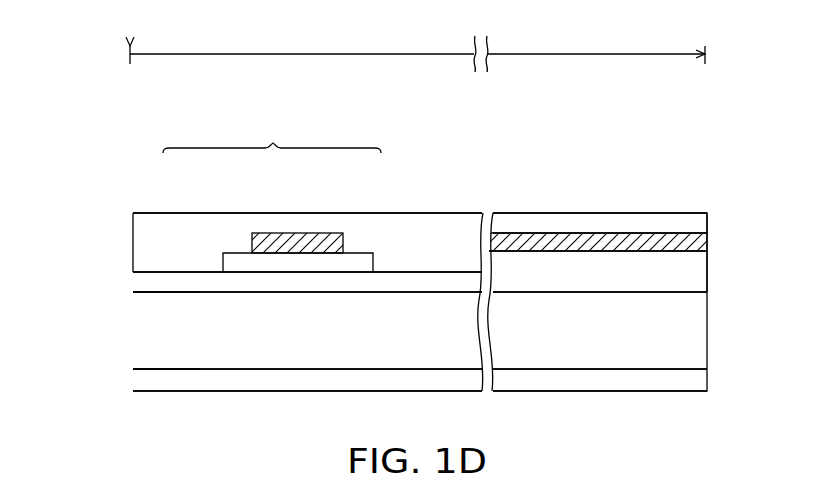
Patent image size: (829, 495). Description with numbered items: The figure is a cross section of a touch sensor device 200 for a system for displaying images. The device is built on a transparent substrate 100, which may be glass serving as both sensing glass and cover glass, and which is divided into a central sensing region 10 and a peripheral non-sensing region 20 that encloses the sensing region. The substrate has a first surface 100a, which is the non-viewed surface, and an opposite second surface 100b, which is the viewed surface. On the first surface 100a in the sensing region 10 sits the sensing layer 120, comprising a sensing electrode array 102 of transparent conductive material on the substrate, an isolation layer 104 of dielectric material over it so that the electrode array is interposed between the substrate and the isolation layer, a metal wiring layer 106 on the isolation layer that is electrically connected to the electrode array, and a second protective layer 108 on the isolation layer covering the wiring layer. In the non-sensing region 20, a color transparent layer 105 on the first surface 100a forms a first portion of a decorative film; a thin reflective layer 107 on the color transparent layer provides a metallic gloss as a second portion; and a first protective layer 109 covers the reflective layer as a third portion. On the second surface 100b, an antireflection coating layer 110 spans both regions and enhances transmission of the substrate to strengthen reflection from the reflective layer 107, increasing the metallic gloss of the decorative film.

The sensing region 10 is at (288, 47).
The non-sensing region 20 is at (581, 39).
The touch sensor device 200 is at (136, 146).
The transparent substrate 100 is at (278, 342).
The first surface 100a is at (165, 292).
The second surface 100b is at (167, 371).
The sensing electrode array 102 is at (240, 281).
The isolation layer 104 is at (352, 262).
The wiring layer 106 is at (294, 243).
The second protective layer 108 is at (188, 226).
The sensing layer 120 is at (272, 135).
The first protective layer 109 is at (668, 219).
The reflective layer 107 is at (700, 241).
The color transparent layer 105 is at (700, 273).
The antireflection coating layer 110 is at (700, 378).